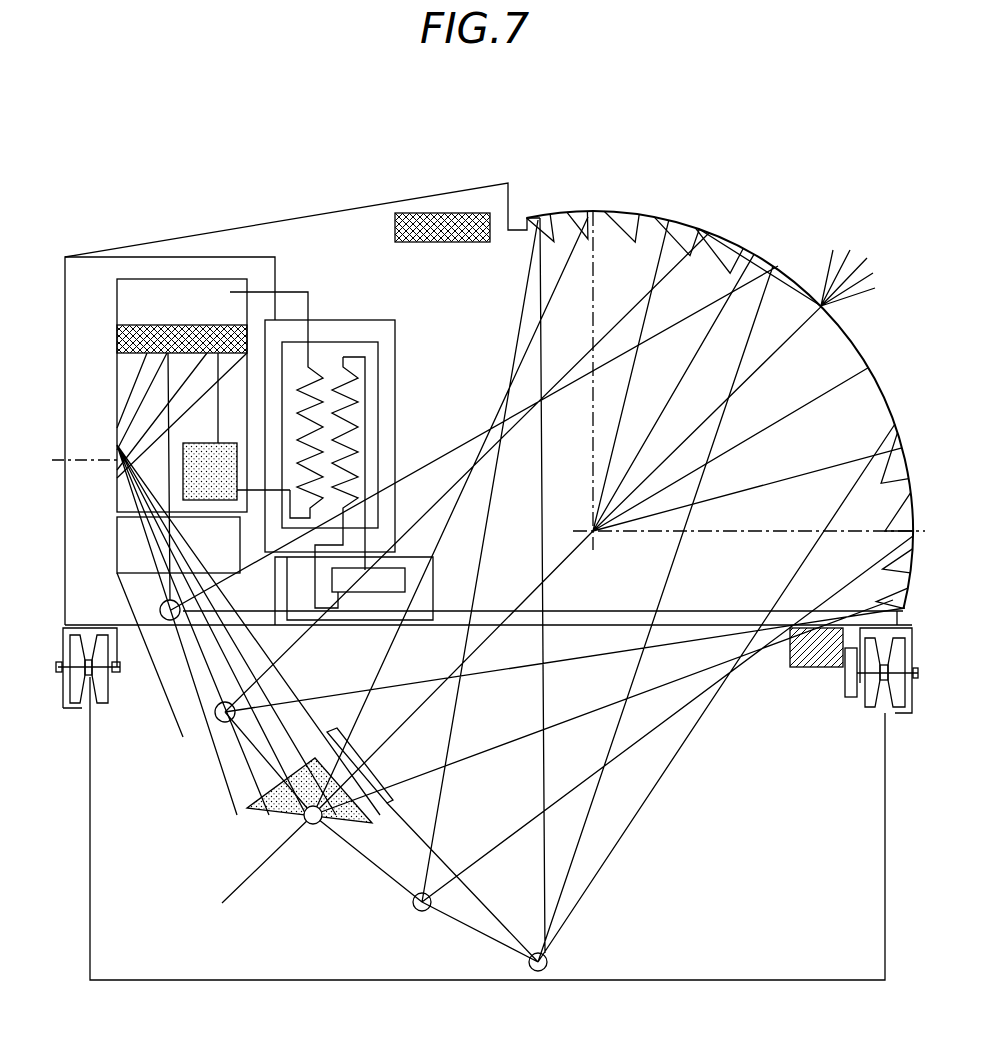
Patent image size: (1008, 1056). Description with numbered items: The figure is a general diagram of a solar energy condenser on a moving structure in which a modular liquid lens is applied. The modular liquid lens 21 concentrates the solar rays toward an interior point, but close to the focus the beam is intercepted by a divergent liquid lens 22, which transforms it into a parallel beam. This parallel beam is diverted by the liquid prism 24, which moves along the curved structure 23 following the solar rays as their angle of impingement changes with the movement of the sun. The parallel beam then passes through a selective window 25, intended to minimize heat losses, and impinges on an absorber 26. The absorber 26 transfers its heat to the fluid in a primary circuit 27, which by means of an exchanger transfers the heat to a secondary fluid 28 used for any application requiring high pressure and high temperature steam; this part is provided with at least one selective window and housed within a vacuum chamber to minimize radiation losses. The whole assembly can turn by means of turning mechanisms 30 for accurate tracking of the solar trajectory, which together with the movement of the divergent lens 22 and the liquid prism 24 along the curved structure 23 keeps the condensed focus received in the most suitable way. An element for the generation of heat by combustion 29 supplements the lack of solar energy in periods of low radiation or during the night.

The modular liquid lens 21 is at (736, 245).
The divergent liquid lens 22 is at (378, 803).
The curved structure 23 is at (458, 927).
The liquid prism 24 is at (270, 807).
The selective window 25 is at (143, 543).
The absorber 26 is at (140, 335).
The primary circuit 27 is at (275, 257).
The secondary fluid 28 is at (357, 357).
The element for the generation of heat by combustion 29 is at (395, 582).
The turning mechanisms 30 is at (90, 677).